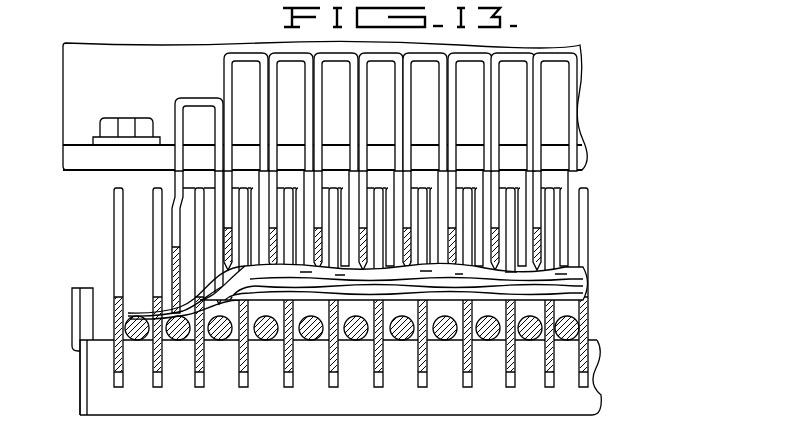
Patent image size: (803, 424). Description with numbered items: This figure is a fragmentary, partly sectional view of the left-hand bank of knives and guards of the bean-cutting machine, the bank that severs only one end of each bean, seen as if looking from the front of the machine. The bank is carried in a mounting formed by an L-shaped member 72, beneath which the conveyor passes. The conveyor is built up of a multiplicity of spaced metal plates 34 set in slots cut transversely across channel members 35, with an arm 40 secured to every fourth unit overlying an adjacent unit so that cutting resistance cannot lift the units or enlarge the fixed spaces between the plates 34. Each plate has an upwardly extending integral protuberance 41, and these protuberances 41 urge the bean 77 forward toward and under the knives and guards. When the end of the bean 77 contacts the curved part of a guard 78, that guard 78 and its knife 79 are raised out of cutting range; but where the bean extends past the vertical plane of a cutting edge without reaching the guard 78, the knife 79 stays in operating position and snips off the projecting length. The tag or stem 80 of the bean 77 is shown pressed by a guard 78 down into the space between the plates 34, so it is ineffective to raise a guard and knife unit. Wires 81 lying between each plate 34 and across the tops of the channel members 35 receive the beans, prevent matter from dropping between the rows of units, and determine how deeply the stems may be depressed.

The metal plates 34 is at (153, 364).
The channel members 35 is at (600, 402).
The arm 40 is at (72, 318).
The protuberances 41 is at (118, 191).
The L-shaped member 72 is at (572, 160).
The bean 77 is at (570, 268).
The guard 78 is at (172, 224).
The knife 79 is at (228, 240).
The stem 80 is at (131, 310).
The wires 81 is at (178, 342).